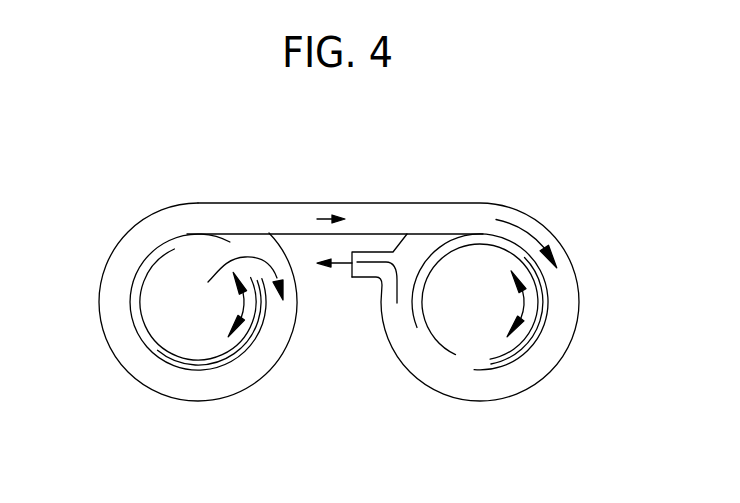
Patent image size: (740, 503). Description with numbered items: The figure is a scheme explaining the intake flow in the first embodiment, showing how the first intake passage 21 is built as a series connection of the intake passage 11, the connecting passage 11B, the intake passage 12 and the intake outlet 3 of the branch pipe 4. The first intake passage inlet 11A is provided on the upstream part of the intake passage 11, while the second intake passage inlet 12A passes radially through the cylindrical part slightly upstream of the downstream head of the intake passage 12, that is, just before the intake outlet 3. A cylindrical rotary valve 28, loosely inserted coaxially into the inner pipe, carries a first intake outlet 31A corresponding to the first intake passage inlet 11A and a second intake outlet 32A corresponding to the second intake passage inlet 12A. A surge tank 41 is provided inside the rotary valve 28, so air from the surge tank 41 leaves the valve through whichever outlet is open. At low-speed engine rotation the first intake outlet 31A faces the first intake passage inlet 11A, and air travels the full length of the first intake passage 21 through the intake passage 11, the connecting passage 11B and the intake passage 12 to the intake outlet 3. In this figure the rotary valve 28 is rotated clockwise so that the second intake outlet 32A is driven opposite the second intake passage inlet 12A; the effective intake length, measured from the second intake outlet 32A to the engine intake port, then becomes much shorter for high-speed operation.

The intake outlet 3 is at (340, 263).
The branch pipe 4 is at (367, 277).
The intake passage 11 is at (130, 256).
The first intake passage inlet 11A is at (243, 252).
The connecting passage 11B is at (378, 216).
The intake passage 12 is at (570, 290).
The second intake passage inlet 12A is at (423, 343).
The first intake passage 21 is at (506, 187).
The rotary valve 28 is at (158, 352).
The first intake outlet 31A is at (214, 252).
The second intake outlet 32A is at (470, 360).
The surge tank 41 is at (212, 320).